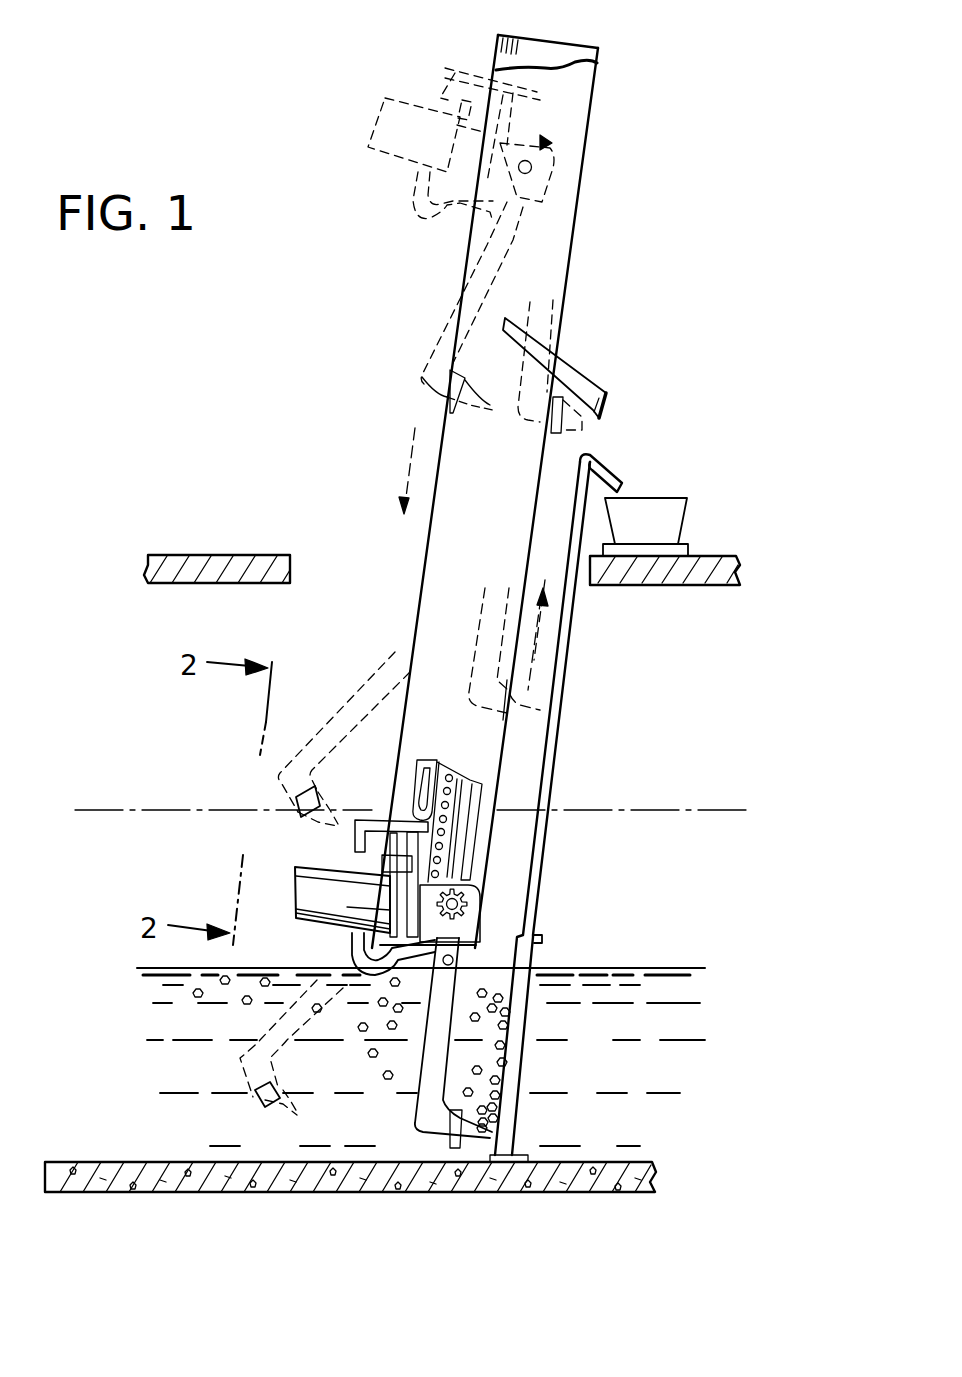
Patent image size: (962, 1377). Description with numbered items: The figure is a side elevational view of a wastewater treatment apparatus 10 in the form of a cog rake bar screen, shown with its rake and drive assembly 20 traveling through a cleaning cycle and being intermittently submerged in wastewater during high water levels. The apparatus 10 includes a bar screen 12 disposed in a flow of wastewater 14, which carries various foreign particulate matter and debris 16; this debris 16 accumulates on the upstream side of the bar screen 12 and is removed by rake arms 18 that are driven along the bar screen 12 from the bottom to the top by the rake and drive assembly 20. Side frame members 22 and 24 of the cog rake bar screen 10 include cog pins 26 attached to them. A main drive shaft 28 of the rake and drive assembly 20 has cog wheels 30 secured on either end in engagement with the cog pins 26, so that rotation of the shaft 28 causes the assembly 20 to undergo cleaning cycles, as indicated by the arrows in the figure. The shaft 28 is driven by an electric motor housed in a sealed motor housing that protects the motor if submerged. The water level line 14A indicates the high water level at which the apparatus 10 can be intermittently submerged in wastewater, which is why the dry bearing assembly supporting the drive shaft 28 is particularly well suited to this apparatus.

The wastewater treatment apparatus 10 is at (277, 139).
The bar screen 12 is at (551, 969).
The wastewater 14 is at (175, 1070).
The water level line 14A is at (107, 808).
The debris 16 is at (490, 1083).
The rake arms 18 is at (428, 1110).
The rake and drive assembly 20 is at (292, 854).
The side frame member 22 is at (574, 150).
The side frame member 24 is at (553, 45).
The cog pins 26 is at (447, 777).
The main drive shaft 28 is at (468, 902).
The cog wheels 30 is at (483, 921).